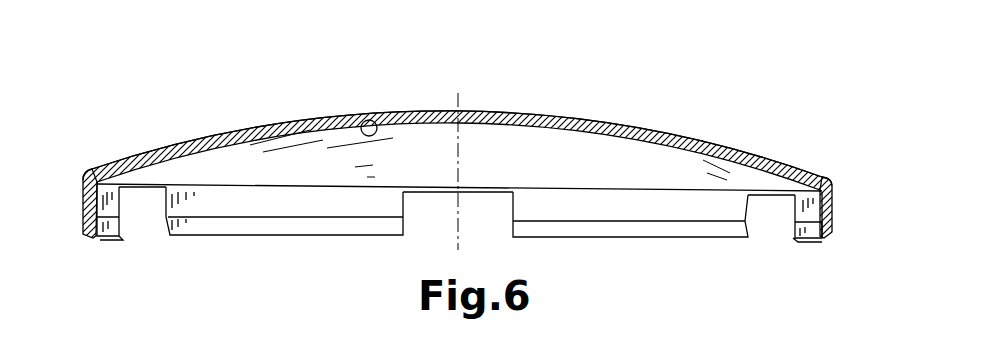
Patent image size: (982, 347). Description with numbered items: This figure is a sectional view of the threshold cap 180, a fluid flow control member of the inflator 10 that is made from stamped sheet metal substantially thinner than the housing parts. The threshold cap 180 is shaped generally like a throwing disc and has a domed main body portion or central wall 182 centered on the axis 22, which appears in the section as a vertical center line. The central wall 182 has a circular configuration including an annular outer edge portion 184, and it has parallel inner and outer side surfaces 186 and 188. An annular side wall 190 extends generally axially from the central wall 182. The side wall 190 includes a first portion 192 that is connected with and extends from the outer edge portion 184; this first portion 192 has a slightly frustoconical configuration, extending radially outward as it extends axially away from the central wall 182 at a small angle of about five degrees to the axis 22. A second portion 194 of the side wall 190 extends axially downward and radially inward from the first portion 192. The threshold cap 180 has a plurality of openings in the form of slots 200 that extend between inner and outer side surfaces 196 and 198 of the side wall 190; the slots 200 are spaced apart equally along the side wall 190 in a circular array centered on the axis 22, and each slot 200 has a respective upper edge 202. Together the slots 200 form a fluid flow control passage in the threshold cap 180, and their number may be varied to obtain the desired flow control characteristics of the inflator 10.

The inflator 10 is at (837, 137).
The axis 22 is at (460, 98).
The threshold cap 180 is at (705, 100).
The central wall 182 is at (583, 122).
The annular outer edge portion 184 is at (105, 172).
The inner side surface 186 is at (378, 121).
The outer side surface 188 is at (312, 121).
The annular side wall 190 is at (837, 197).
The first portion 192 is at (83, 190).
The second portion 194 is at (88, 235).
The inner side surface 196 is at (810, 212).
The outer side surface 198 is at (832, 218).
The slots 200 is at (158, 233).
The upper edge 202 is at (140, 193).